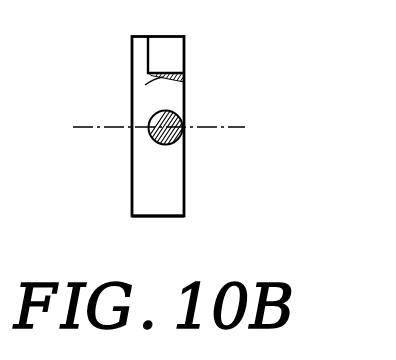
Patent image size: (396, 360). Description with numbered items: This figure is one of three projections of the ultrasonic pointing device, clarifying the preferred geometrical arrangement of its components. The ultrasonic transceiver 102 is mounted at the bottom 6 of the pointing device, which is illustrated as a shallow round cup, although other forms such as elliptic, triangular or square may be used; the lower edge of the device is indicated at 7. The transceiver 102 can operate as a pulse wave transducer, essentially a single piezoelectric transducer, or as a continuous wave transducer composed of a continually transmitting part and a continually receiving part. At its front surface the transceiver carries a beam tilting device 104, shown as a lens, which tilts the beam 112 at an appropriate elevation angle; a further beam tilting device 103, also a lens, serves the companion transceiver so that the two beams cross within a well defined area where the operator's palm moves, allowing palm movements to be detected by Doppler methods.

The bottom 6 is at (217, 210).
The bottom surface 7 is at (138, 233).
The ultrasonic transceiver 102 is at (208, 44).
The beam tilting device 103 is at (208, 152).
The beam tilting device 104 is at (218, 88).
The beam 112 is at (145, 85).